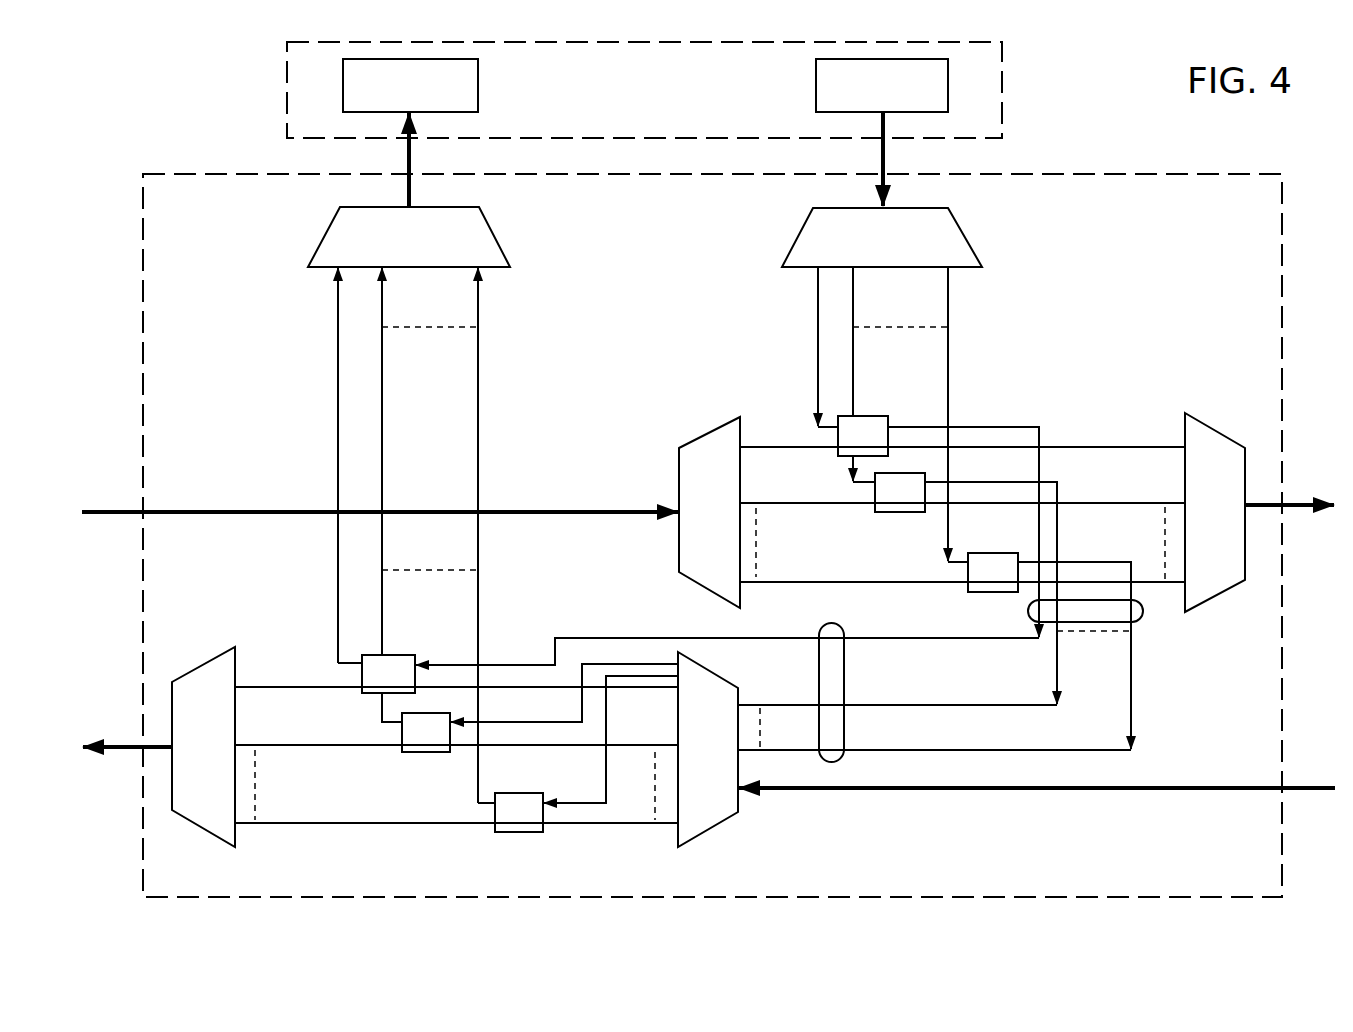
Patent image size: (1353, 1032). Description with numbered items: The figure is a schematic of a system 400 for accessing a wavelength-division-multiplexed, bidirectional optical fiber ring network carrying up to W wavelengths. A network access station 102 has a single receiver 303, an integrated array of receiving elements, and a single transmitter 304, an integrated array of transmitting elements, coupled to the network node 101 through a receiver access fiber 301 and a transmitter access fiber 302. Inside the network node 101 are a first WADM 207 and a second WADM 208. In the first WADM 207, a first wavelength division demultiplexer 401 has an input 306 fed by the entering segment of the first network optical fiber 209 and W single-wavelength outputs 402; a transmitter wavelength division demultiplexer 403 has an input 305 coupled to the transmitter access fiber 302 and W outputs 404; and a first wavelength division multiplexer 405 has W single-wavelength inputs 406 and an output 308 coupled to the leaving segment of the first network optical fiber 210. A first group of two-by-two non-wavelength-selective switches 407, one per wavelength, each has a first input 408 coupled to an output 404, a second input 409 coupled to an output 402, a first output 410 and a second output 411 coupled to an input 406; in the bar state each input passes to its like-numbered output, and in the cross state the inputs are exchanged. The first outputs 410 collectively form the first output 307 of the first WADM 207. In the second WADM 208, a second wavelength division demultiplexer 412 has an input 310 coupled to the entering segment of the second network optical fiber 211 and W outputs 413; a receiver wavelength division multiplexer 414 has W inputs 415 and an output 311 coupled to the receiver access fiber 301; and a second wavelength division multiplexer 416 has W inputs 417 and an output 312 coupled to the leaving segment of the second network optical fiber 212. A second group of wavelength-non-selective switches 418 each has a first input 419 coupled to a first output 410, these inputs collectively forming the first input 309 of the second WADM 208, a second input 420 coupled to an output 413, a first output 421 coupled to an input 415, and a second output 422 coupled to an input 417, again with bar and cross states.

The network node 101 is at (182, 172).
The network access station 102 is at (1003, 70).
The first WADM 207 is at (1097, 368).
The second WADM 208 is at (572, 471).
The first network optical fiber segment entering the network node 209 is at (120, 510).
The first network optical fiber segment leaving the network node 210 is at (1300, 500).
The second network optical fiber segment entering the network node 211 is at (1298, 786).
The second network optical fiber segment leaving the network node 212 is at (115, 745).
The receiver access fiber 301 is at (407, 163).
The transmitter access fiber 302 is at (880, 163).
The receiver 303 is at (384, 101).
The transmitter 304 is at (856, 101).
The input of the transmitter wavelength division demultiplexer 305 is at (887, 206).
The input of the first wavelength division demultiplexer 306 is at (677, 518).
The first output of the first WADM 307 is at (1140, 622).
The output of the first wavelength division multiplexer 308 is at (1257, 510).
The first input of the second WADM 309 is at (844, 760).
The input of the second wavelength division demultiplexer 310 is at (743, 797).
The output of the receiver wavelength division multiplexer 311 is at (410, 206).
The output of the second wavelength division multiplexer 312 is at (160, 743).
The system 400 is at (1172, 146).
The first wavelength division demultiplexer 401 is at (684, 531).
The single-wavelength outputs of the first wavelength division demultiplexer 402 is at (767, 503).
The transmitter wavelength division demultiplexer 403 is at (856, 251).
The single-wavelength outputs of the transmitter wavelength division demultiplexer 404 is at (853, 283).
The first wavelength division multiplexer 405 is at (1189, 533).
The single-wavelength inputs of the first wavelength division multiplexer 406 is at (1140, 503).
The first group of 2×2 non-wavelength-selective switches 407 is at (870, 415).
The first input of a first-group switch 408 is at (812, 432).
The second input of a first-group switch 409 is at (838, 447).
The first output of a first-group switch 410 is at (890, 423).
The second output of a first-group switch 411 is at (890, 445).
The second wavelength division demultiplexer 412 is at (682, 766).
The single-wavelength outputs of the second wavelength division demultiplexer 413 is at (633, 688).
The receiver wavelength division multiplexer 414 is at (384, 251).
The single-wavelength inputs of the receiver wavelength division multiplexer 415 is at (382, 285).
The second wavelength division multiplexer 416 is at (179, 763).
The single-wavelength inputs of the second wavelength division multiplexer 417 is at (283, 744).
The second group of wavelength-non-selective switches 418 is at (393, 652).
The first input of a second-group switch 419 is at (420, 663).
The second input of a second-group switch 420 is at (443, 670).
The first output of a second-group switch 421 is at (493, 807).
The second output of a second-group switch 422 is at (363, 688).